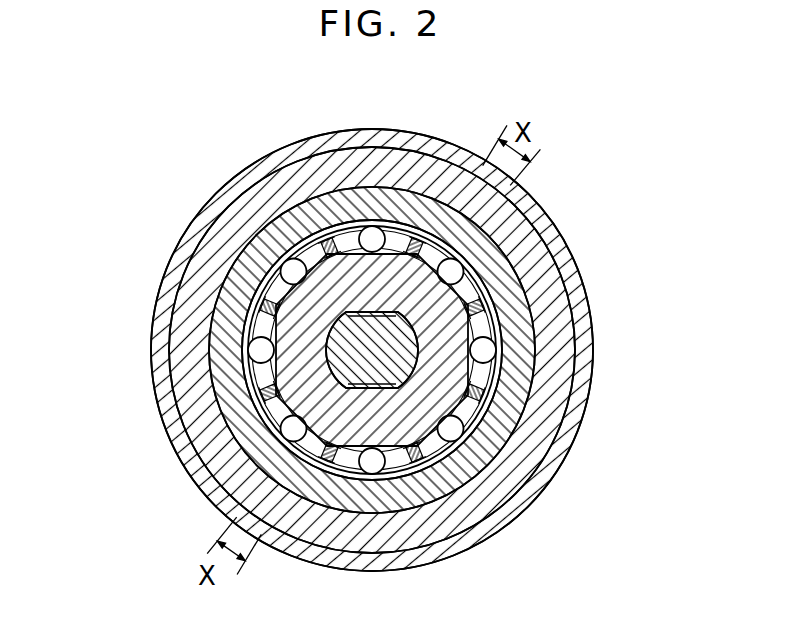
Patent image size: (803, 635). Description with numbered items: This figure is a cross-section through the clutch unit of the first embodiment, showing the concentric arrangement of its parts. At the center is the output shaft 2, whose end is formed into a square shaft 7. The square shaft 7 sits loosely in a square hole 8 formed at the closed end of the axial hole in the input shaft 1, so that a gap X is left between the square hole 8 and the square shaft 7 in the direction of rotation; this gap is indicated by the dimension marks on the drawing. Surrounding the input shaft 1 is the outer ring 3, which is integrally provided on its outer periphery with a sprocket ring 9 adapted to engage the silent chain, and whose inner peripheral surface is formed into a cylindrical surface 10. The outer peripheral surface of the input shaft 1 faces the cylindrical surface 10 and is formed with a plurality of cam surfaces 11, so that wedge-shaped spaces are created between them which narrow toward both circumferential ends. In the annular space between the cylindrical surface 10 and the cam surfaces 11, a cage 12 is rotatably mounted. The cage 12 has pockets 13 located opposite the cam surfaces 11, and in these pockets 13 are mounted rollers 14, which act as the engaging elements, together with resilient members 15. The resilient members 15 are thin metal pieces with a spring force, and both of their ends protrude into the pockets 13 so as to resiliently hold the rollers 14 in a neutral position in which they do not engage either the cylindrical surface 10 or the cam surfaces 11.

The input shaft 1 is at (404, 422).
The output shaft 2 is at (420, 351).
The outer ring 3 is at (522, 283).
The square shaft 7 is at (387, 343).
The square hole 8 is at (402, 366).
The sprocket ring 9 is at (547, 222).
The cylindrical surface 10 is at (288, 227).
The cam surfaces 11 is at (252, 240).
The cage 12 is at (243, 405).
The pockets 13 is at (258, 378).
The rollers 14 is at (257, 350).
The resilient members 15 is at (250, 317).